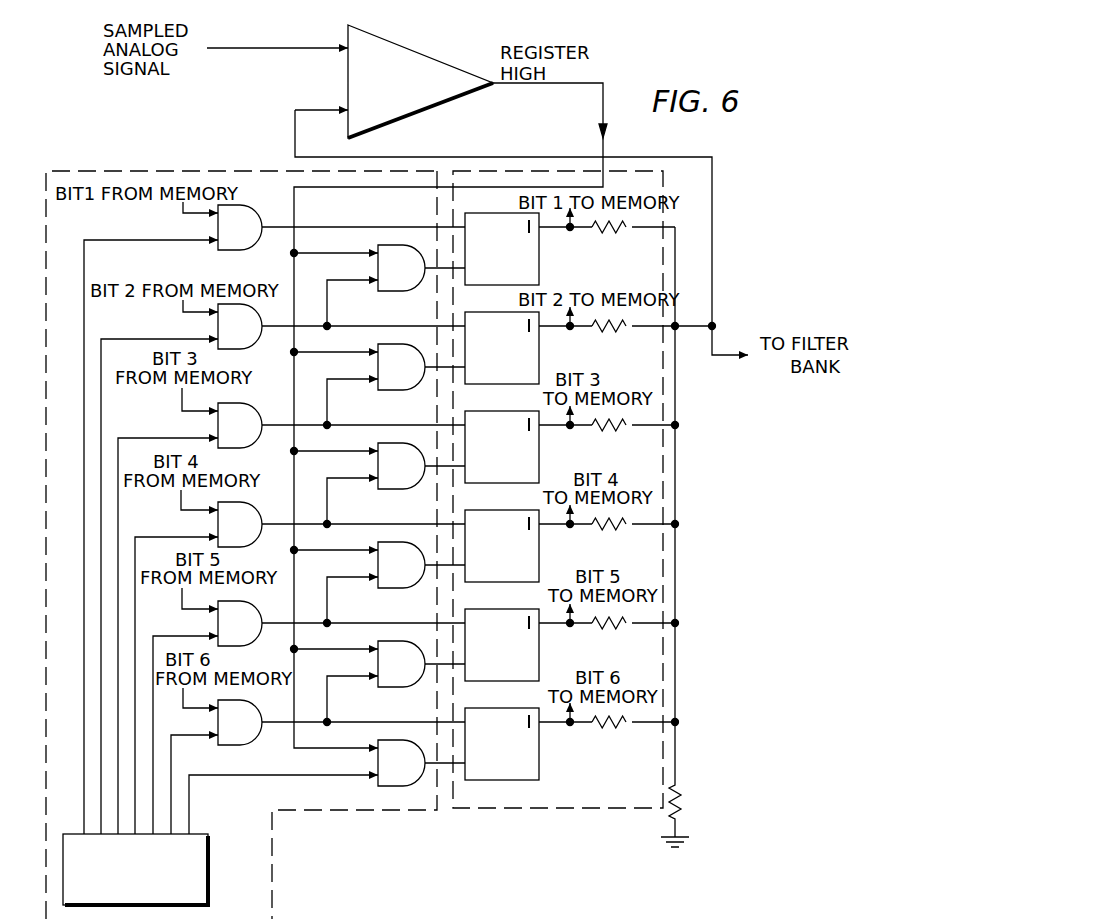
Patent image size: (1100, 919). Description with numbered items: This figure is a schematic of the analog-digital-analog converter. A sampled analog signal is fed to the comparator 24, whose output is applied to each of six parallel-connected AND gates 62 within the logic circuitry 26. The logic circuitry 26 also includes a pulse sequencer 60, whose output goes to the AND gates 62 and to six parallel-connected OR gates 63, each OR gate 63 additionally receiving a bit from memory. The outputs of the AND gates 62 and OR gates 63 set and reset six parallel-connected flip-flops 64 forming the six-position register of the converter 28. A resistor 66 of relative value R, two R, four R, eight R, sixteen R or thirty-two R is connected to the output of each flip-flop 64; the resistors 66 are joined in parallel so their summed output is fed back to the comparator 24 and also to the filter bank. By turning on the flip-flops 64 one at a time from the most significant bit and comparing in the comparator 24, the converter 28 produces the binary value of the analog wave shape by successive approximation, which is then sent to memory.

The comparator 24 is at (432, 57).
The logic circuitry 26 is at (272, 872).
The converter 28 is at (548, 808).
The pulse sequencer 60 is at (208, 870).
The AND gates 62 is at (414, 291).
The OR gates 63 is at (256, 207).
The flip-flops 64 is at (539, 245).
The resistors 66 is at (618, 232).